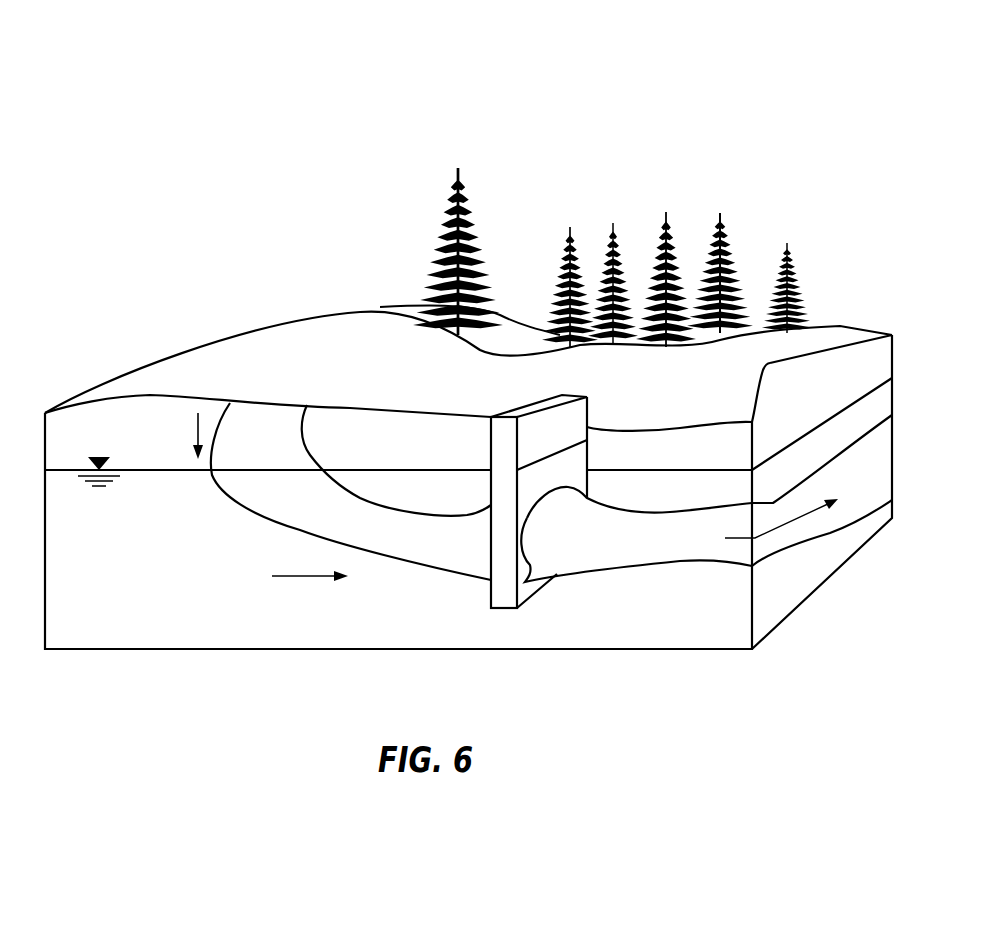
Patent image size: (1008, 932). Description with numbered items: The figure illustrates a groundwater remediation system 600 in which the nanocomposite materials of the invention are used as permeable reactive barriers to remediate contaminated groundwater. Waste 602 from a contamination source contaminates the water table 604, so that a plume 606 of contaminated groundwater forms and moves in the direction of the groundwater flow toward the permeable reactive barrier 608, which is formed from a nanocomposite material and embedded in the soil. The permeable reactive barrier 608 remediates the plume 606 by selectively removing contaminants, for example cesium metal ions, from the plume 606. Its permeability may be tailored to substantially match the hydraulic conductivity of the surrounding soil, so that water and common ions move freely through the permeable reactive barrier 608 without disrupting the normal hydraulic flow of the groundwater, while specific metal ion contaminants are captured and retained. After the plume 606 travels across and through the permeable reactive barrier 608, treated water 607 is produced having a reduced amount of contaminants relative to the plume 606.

The groundwater remediation system 600 is at (513, 137).
The waste 602 is at (262, 414).
The water table 604 is at (468, 461).
The plume 606 is at (329, 496).
The treated water 607 is at (706, 498).
The permeable reactive barrier 608 is at (515, 518).